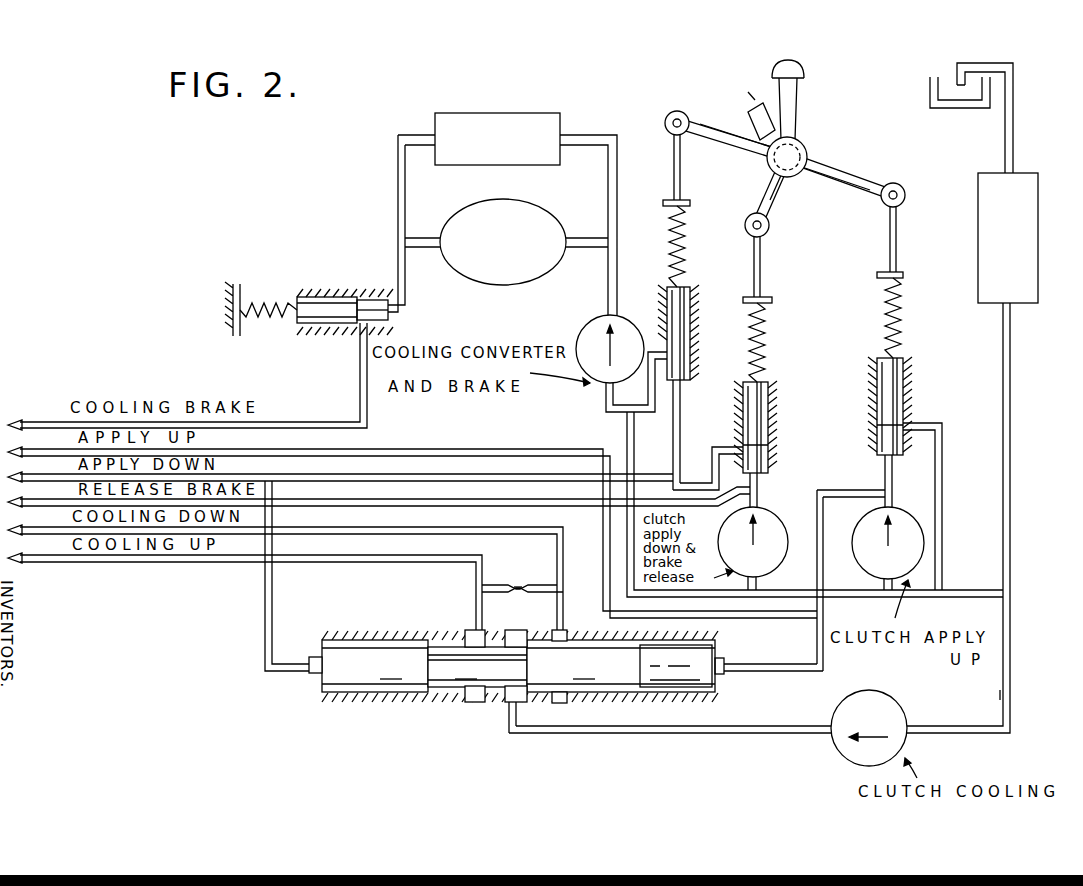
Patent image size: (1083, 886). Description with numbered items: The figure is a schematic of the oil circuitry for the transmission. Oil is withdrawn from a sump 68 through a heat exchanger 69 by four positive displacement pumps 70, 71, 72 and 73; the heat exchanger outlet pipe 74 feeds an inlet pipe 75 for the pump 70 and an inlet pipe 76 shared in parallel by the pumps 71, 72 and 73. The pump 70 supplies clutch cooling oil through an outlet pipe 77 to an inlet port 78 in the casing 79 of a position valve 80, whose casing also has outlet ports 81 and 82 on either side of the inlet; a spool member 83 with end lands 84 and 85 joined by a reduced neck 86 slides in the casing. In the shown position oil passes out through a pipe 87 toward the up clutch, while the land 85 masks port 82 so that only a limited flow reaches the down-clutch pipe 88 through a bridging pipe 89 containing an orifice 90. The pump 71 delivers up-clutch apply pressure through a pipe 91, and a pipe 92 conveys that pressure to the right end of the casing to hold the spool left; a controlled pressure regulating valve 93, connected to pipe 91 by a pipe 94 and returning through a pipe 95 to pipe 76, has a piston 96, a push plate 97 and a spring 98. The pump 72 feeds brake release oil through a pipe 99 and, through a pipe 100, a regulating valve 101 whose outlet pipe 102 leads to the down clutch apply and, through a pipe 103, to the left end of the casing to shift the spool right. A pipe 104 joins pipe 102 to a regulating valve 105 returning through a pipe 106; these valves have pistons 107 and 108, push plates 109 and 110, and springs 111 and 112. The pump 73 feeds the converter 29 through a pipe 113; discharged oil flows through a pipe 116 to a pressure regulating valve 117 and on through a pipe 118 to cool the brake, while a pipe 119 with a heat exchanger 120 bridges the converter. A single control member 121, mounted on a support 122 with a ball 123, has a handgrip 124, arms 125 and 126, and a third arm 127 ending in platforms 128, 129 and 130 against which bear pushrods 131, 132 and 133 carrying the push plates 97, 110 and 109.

The converter 29 is at (511, 288).
The sump 68 is at (960, 108).
The heat exchanger 69 is at (1022, 305).
The pump 70 is at (848, 764).
The pump 71 is at (868, 569).
The pump 72 is at (771, 566).
The pump 73 is at (592, 328).
The heat exchanger outlet pipe 74 is at (1012, 462).
The inlet pipe 75 is at (1012, 690).
The inlet pipe 76 is at (976, 598).
The outlet pipe 77 is at (680, 735).
The inlet port 78 is at (507, 706).
The casing 79 is at (394, 702).
The position valve 80 is at (446, 700).
The outlet port 81 is at (474, 630).
The outlet port 82 is at (590, 615).
The spool member 83 is at (338, 673).
The end land 84 is at (375, 666).
The end land 85 is at (625, 666).
The reduced neck 86 is at (477, 667).
The pipe 87 is at (348, 564).
The pipe 88 is at (509, 536).
The pipe 89 is at (504, 595).
The orifice 90 is at (523, 594).
The pipe 91 is at (835, 493).
The pipe 92 is at (797, 673).
The controlled pressure regulating valve 93 is at (910, 395).
The pipe 94 is at (893, 490).
The pipe 95 is at (943, 477).
The piston 96 is at (883, 375).
The push plate 97 is at (878, 276).
The spring 98 is at (885, 333).
The pipe 99 is at (574, 483).
The pipe 100 is at (760, 491).
The controlled pressure regulating valve 101 is at (783, 443).
The pipe 102 is at (717, 455).
The pipe 103 is at (265, 612).
The pipe 104 is at (673, 432).
The controlled pressure regulating valve 105 is at (692, 320).
The pipe 106 is at (635, 423).
The piston 107 is at (768, 405).
The piston 108 is at (697, 296).
The push plate 109 is at (775, 300).
The push plate 110 is at (664, 202).
The spring 111 is at (768, 342).
The spring 112 is at (686, 240).
The pipe 113 is at (602, 290).
The pipe 116 is at (437, 250).
The pressure regulating valve 117 is at (340, 297).
The pipe 118 is at (312, 420).
The pipe 119 is at (405, 135).
The heat exchanger 120 is at (515, 113).
The control member 121 is at (827, 153).
The support 122 is at (753, 110).
The ball 123 is at (770, 165).
The handgrip 124 is at (801, 108).
The arm 125 is at (897, 173).
The arm 126 is at (720, 128).
The third arm 127 is at (783, 202).
The platform 128 is at (905, 195).
The platform 129 is at (665, 116).
The platform 130 is at (770, 238).
The pushrod 131 is at (898, 246).
The pushrod 132 is at (672, 160).
The pushrod 133 is at (762, 280).